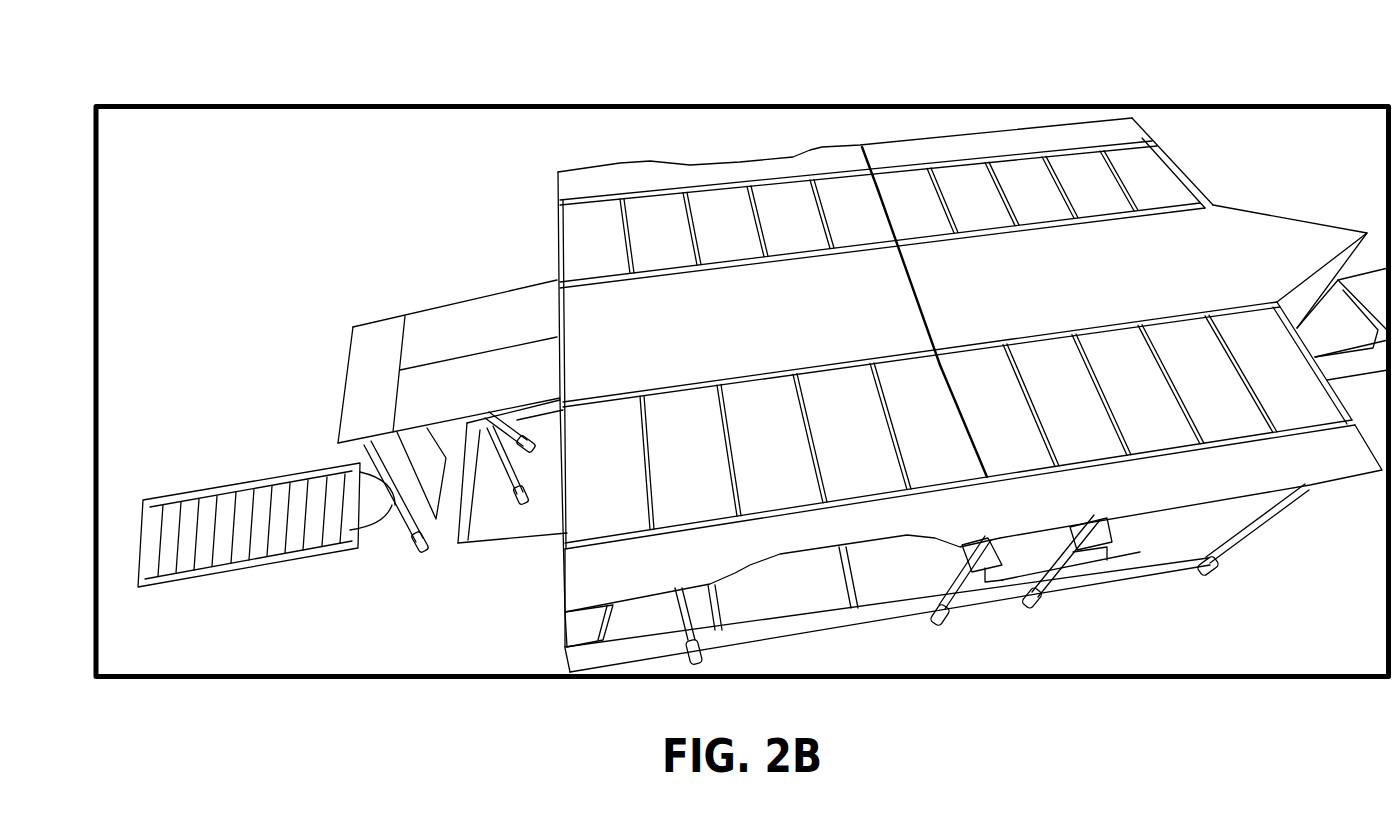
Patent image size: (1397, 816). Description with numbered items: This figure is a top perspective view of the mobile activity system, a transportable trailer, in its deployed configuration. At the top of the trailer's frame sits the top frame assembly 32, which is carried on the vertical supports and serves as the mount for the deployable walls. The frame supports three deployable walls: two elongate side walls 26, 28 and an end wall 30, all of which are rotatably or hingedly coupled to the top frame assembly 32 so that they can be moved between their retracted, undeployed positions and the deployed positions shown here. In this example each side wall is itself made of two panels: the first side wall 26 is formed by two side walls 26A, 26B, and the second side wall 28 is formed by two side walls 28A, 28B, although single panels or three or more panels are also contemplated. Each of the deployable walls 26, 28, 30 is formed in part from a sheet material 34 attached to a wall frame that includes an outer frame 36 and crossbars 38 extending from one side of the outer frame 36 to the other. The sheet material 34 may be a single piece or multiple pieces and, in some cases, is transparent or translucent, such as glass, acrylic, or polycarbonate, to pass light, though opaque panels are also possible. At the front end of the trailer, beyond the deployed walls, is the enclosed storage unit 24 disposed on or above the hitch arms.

The storage unit 24 is at (1258, 240).
The first side wall 26 is at (850, 76).
The side wall 26A is at (997, 143).
The side wall 26B is at (722, 175).
The second side wall 28 is at (1010, 580).
The side wall 28A is at (1192, 480).
The side wall 28B is at (778, 538).
The end wall 30 is at (417, 340).
The top frame assembly 32 is at (593, 320).
The sheet material 34 is at (1140, 187).
The outer frame 36 is at (560, 518).
The crossbars 38 is at (640, 473).